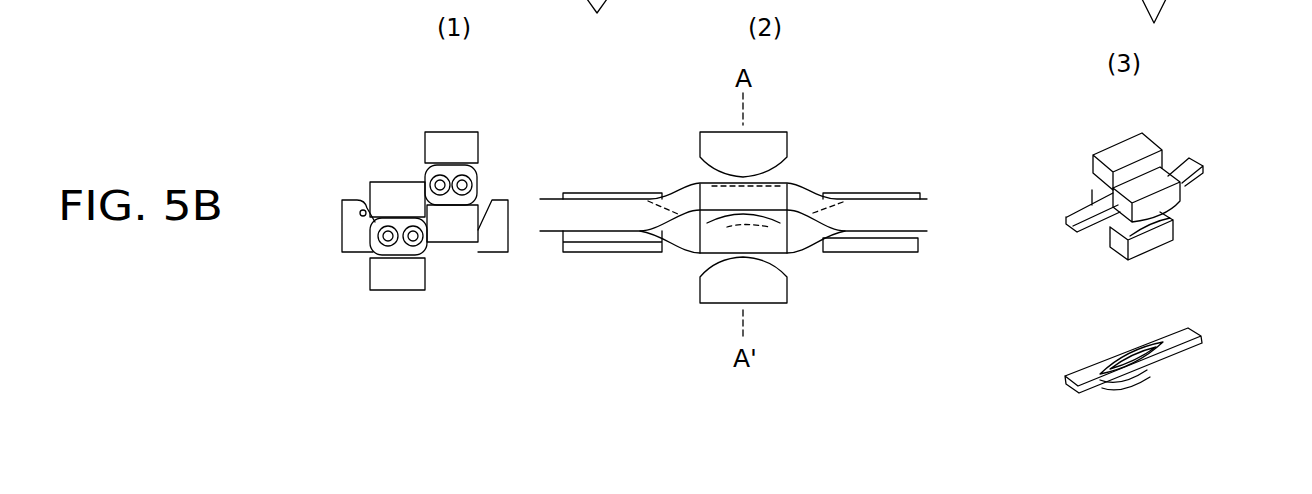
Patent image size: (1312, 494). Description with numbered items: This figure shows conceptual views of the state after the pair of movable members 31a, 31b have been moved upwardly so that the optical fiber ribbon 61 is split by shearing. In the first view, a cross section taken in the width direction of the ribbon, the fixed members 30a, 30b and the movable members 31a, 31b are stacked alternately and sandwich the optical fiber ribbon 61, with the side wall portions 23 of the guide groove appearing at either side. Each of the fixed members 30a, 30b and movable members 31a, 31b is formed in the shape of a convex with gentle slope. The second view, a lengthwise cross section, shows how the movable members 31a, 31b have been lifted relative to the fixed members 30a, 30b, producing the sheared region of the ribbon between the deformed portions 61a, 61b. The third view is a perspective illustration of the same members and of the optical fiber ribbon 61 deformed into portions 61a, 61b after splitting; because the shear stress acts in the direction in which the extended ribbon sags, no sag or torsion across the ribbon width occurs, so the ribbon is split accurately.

The side wall portions 23 is at (360, 213).
The fixed member 30a is at (382, 285).
The fixed member 30b is at (383, 195).
The movable member 31a is at (453, 230).
The movable member 31b is at (462, 141).
The optical fiber ribbon 61 is at (883, 210).
The split portion of optical fiber ribbon 61a is at (807, 237).
The split portion of optical fiber ribbon 61b is at (803, 196).